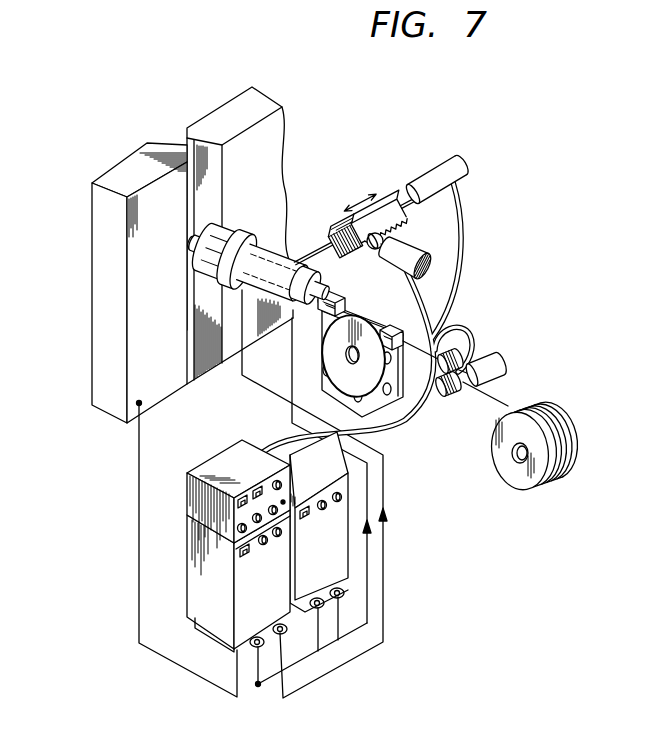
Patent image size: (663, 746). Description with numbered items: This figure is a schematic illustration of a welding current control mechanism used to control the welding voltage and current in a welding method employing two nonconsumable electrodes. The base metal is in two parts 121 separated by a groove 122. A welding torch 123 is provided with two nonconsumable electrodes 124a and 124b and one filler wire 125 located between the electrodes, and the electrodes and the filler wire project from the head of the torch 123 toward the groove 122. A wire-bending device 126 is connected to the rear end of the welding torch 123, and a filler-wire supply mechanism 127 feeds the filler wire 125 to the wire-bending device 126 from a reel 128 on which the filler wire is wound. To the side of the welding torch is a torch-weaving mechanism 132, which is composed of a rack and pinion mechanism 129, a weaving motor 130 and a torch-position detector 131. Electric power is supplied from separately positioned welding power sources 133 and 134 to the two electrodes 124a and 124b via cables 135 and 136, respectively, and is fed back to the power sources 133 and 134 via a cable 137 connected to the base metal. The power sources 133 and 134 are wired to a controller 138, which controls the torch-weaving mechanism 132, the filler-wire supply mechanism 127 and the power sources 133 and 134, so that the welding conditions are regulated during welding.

The base metal parts 121 is at (97, 223).
The groove 122 is at (215, 159).
The welding torch 123 is at (320, 286).
The nonconsumable electrode 124a is at (205, 224).
The nonconsumable electrode 124b is at (193, 248).
The filler wire 125 is at (200, 242).
The wire-bending device 126 is at (372, 389).
The filler-wire supply mechanism 127 is at (501, 359).
The reel 128 is at (567, 433).
The rack and pinion mechanism 129 is at (383, 237).
The weaving motor 130 is at (434, 268).
The torch-position detector 131 is at (459, 165).
The torch-weaving mechanism 132 is at (411, 162).
The welding power source 133 is at (339, 567).
The welding power source 134 is at (277, 602).
The cable 135 is at (369, 591).
The cable 136 is at (384, 557).
The cable 137 is at (139, 603).
The controller 138 is at (213, 463).